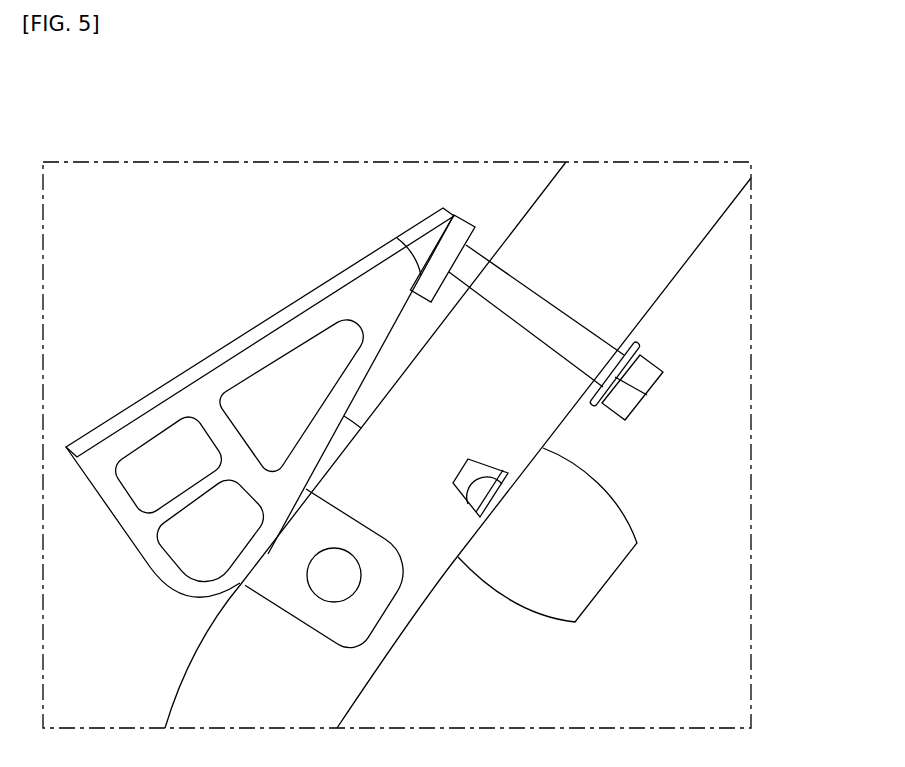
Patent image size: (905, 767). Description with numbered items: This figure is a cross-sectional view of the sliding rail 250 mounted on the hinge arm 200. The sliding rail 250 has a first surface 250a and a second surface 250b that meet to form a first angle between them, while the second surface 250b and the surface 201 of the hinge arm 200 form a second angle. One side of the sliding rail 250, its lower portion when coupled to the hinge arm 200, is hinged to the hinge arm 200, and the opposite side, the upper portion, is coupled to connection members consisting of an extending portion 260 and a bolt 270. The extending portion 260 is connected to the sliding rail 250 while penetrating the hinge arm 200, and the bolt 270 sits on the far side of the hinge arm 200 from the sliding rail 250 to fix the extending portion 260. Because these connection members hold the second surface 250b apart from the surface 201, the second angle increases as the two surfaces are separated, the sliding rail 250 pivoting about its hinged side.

The hinge arm 200 is at (705, 234).
The surface of the hinge arm 201 is at (533, 201).
The sliding rail 250 is at (270, 408).
The first surface 250a is at (152, 392).
The second surface 250b is at (428, 293).
The extending portion 260 is at (568, 330).
The bolt 270 is at (668, 383).